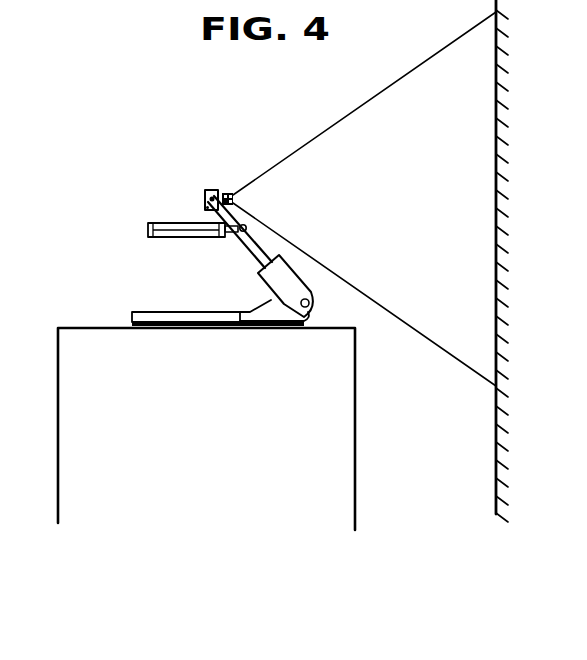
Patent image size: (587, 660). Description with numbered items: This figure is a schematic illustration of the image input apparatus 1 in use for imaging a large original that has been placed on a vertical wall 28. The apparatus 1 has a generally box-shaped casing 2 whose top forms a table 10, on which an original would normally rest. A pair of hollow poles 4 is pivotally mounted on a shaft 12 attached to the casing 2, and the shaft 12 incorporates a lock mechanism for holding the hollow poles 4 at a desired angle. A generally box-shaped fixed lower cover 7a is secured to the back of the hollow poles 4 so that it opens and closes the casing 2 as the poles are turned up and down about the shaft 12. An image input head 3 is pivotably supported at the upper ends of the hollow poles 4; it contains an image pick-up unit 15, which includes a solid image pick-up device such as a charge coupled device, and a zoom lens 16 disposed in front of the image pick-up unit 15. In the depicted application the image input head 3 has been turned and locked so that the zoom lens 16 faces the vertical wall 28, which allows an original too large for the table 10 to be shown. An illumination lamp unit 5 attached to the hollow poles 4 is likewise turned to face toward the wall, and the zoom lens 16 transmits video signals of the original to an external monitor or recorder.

The image input apparatus 1 is at (202, 187).
The casing 2 is at (143, 329).
The image input head 3 is at (250, 126).
The hollow poles 4 is at (247, 245).
The illumination lamp unit 5 is at (180, 238).
The fixed lower cover 7a is at (302, 272).
The table 10 is at (150, 312).
The shaft 12 is at (310, 304).
The image pick-up unit 15 is at (210, 190).
The zoom lens 16 is at (231, 190).
The vertical wall 28 is at (497, 154).